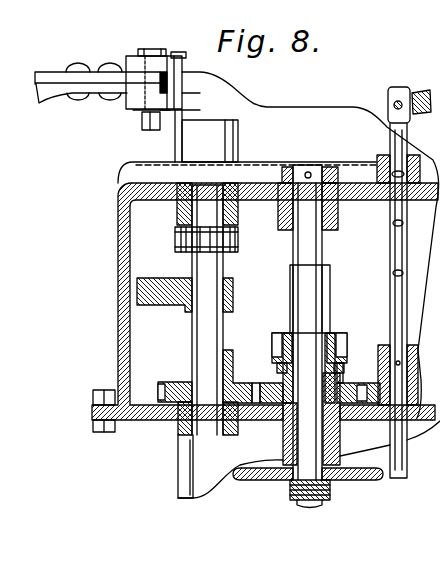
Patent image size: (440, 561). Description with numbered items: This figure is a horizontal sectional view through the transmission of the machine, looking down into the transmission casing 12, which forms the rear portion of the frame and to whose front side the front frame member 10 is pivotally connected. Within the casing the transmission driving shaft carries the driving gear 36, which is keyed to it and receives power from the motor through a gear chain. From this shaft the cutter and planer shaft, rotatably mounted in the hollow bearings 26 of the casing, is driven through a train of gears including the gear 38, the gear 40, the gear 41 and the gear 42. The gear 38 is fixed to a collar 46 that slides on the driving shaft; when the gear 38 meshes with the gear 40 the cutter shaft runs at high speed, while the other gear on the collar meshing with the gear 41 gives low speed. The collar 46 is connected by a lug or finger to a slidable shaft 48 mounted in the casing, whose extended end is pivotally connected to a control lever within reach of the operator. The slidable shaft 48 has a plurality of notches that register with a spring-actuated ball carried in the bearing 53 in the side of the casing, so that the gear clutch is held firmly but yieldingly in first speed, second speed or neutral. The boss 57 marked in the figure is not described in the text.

The front frame member 10 is at (49, 63).
The transmission casing 12 is at (111, 183).
The hollow bearings 26 is at (343, 333).
The driving gear 36 is at (252, 483).
The gear 38 is at (357, 404).
The gear 40 is at (160, 392).
The gear 41 is at (140, 289).
The gear 42 is at (178, 240).
The collar 46 is at (334, 333).
The slidable shaft 48 is at (345, 376).
The bearing 53 is at (385, 156).
The boss 57 is at (307, 437).